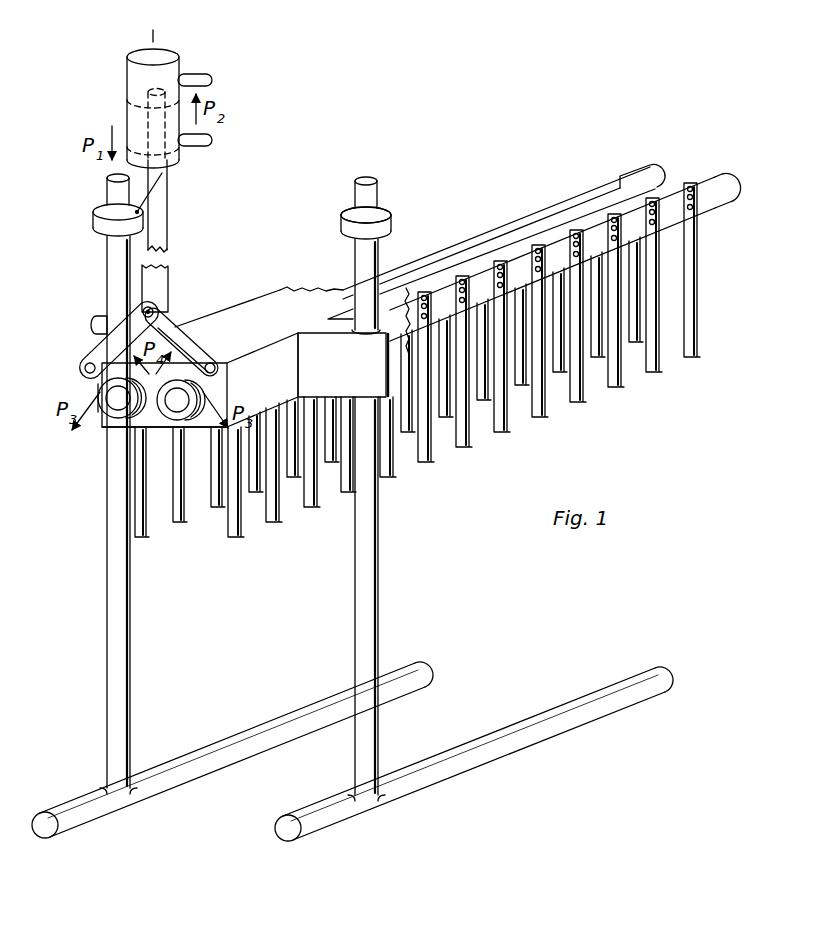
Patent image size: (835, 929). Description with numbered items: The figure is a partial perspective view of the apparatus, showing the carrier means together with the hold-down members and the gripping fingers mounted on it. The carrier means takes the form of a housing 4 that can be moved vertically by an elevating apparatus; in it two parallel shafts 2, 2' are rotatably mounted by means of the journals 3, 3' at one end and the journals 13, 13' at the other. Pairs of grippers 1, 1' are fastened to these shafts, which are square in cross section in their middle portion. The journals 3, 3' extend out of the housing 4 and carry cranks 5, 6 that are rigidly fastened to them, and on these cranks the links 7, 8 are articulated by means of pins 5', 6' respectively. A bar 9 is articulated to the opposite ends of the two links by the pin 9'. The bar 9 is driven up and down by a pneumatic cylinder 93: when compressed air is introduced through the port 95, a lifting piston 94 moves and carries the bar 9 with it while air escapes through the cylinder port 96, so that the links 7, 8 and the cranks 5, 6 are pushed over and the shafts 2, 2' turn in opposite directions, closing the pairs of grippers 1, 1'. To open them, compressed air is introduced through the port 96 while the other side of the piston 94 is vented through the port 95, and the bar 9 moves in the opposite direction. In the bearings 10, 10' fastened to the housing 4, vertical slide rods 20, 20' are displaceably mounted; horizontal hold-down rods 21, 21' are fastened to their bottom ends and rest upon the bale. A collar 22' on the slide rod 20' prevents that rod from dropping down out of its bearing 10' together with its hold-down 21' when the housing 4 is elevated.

The gripper 1 is at (389, 411).
The gripper 1' is at (460, 384).
The shaft 2 is at (499, 223).
The shaft 2' is at (552, 254).
The journal 3 is at (97, 412).
The journal 3' is at (145, 446).
The housing 4 is at (272, 307).
The crank 5 is at (70, 395).
The pin 5' is at (66, 358).
The crank 6 is at (205, 400).
The pin 6' is at (242, 360).
The link 7 is at (100, 352).
The link 8 is at (173, 330).
The bar 9 is at (173, 236).
The pin 9' is at (173, 292).
The bearing 10 is at (81, 298).
The bearing 10' is at (343, 316).
The journal 13 is at (656, 149).
The journal 13' is at (729, 162).
The vertical slide rod 20 is at (136, 484).
The vertical slide rod 20' is at (388, 489).
The hold-down rod 21 is at (232, 764).
The hold-down rod 21' is at (474, 754).
The collar 22' is at (392, 186).
The pneumatic cylinder 93 is at (125, 75).
The lifting piston 94 is at (135, 105).
The port 95 is at (200, 80).
The port 96 is at (214, 140).